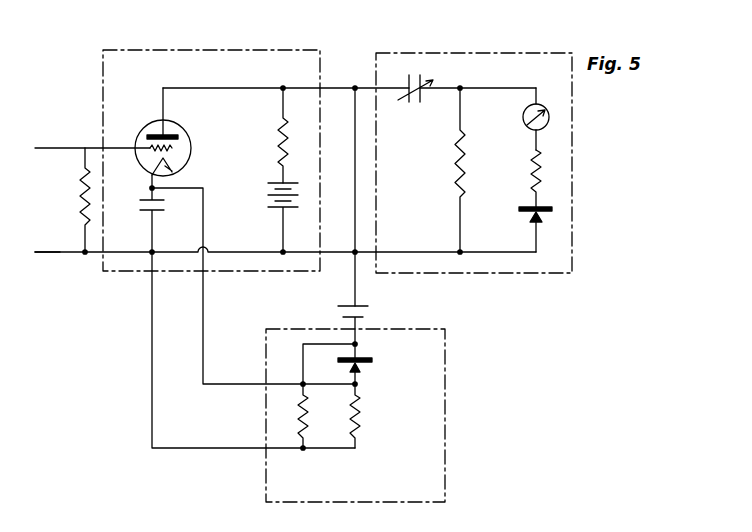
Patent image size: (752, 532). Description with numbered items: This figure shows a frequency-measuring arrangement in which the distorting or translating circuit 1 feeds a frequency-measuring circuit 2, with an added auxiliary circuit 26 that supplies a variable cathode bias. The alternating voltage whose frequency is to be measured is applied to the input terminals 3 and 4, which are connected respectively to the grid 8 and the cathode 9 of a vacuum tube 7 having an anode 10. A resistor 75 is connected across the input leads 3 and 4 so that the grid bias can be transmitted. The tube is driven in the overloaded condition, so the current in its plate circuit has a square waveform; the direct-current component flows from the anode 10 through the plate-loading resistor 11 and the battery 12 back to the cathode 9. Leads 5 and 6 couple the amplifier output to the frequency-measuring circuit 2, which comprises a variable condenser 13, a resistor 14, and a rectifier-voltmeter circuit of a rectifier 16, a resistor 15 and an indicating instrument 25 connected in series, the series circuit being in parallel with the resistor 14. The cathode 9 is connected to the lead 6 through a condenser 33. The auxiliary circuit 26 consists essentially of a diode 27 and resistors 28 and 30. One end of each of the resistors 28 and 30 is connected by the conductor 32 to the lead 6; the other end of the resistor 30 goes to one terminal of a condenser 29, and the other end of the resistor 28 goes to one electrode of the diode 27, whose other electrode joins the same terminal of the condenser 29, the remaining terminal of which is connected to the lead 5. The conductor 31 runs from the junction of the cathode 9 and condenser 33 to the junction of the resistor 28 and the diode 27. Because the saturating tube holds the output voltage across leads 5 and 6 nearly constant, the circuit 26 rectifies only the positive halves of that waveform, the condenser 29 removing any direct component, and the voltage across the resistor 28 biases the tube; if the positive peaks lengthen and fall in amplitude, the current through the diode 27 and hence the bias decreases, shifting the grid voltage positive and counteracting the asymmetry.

The distorting or translating circuit 1 is at (157, 50).
The frequency-measuring circuit 2 is at (483, 53).
The input terminal 3 is at (57, 148).
The input terminal 4 is at (50, 270).
The connecting lead 5 is at (327, 88).
The connecting lead 6 is at (328, 274).
The vacuum tube 7 is at (146, 125).
The grid 8 is at (177, 151).
The cathode 9 is at (178, 165).
The anode 10 is at (170, 137).
The resistor 11 is at (278, 144).
The battery 12 is at (270, 200).
The condenser 13 is at (412, 104).
The resistor 14 is at (456, 161).
The resistor 15 is at (541, 172).
The rectifier 16 is at (550, 214).
The indicating instrument 25 is at (548, 112).
The auxiliary circuit 26 is at (447, 348).
The diode 27 is at (361, 367).
The resistor 28 is at (359, 421).
The condenser 29 is at (372, 313).
The resistor 30 is at (311, 436).
The conductor 31 is at (203, 346).
The conductor 32 is at (151, 389).
The condenser 33 is at (165, 211).
The resistor 75 is at (72, 205).